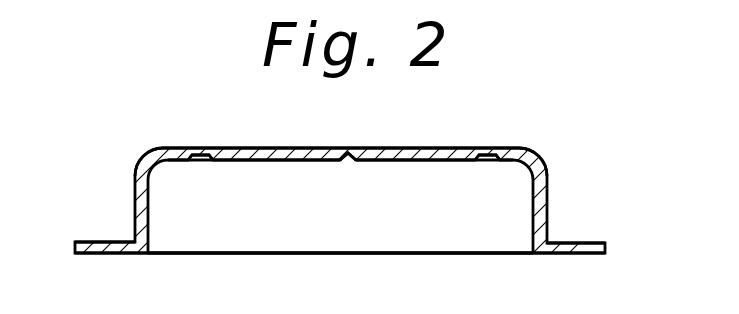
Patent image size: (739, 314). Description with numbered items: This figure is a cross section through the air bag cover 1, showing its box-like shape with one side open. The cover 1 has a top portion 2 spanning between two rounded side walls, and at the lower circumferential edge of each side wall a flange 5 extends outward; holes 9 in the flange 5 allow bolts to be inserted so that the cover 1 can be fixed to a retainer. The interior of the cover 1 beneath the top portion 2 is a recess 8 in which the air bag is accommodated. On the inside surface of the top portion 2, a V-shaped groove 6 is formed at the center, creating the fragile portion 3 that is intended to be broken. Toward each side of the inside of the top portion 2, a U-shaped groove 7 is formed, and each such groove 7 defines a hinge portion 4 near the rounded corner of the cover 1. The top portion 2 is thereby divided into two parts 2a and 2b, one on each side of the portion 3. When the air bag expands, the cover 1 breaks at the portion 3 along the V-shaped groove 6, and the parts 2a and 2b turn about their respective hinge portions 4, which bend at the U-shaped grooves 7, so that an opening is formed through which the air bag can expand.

The cover 1 is at (163, 145).
The top portion 2 is at (177, 147).
The part 2a is at (418, 147).
The part 2b is at (283, 147).
The portion to be broken 3 is at (352, 147).
The hinge portion 4 is at (205, 147).
The flange 5 is at (85, 240).
The V-shaped groove 6 is at (345, 163).
The U-shaped groove 7 is at (204, 163).
The recess 8 is at (390, 238).
The hole 9 is at (97, 256).